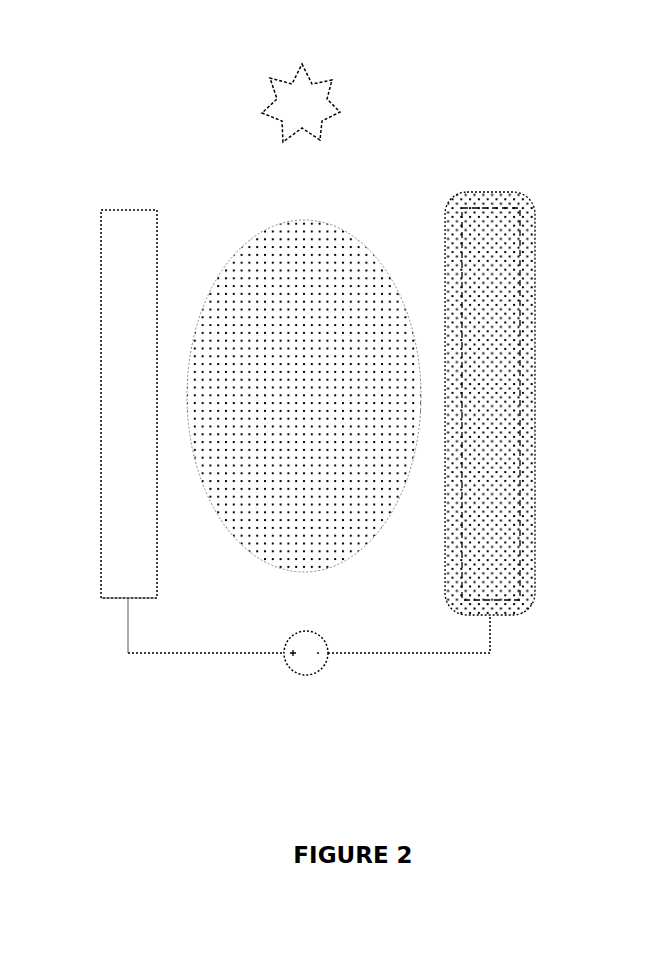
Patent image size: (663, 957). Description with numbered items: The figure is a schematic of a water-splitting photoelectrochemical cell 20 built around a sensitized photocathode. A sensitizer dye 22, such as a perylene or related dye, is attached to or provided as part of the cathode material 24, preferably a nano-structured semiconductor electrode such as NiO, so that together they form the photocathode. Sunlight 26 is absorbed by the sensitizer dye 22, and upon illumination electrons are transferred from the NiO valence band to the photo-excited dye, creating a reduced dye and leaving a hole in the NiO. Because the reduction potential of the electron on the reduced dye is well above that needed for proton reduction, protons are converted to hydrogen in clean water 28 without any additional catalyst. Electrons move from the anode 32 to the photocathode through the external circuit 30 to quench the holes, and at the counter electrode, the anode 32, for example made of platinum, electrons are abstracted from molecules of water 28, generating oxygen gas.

The photoelectrochemical cell 20 is at (152, 62).
The sensitizer dye 22 is at (482, 192).
The cathode material 24 is at (528, 372).
The sunlight 26 is at (404, 192).
The water 28 is at (304, 396).
The external circuit 30 is at (433, 656).
The anode 32 is at (117, 462).